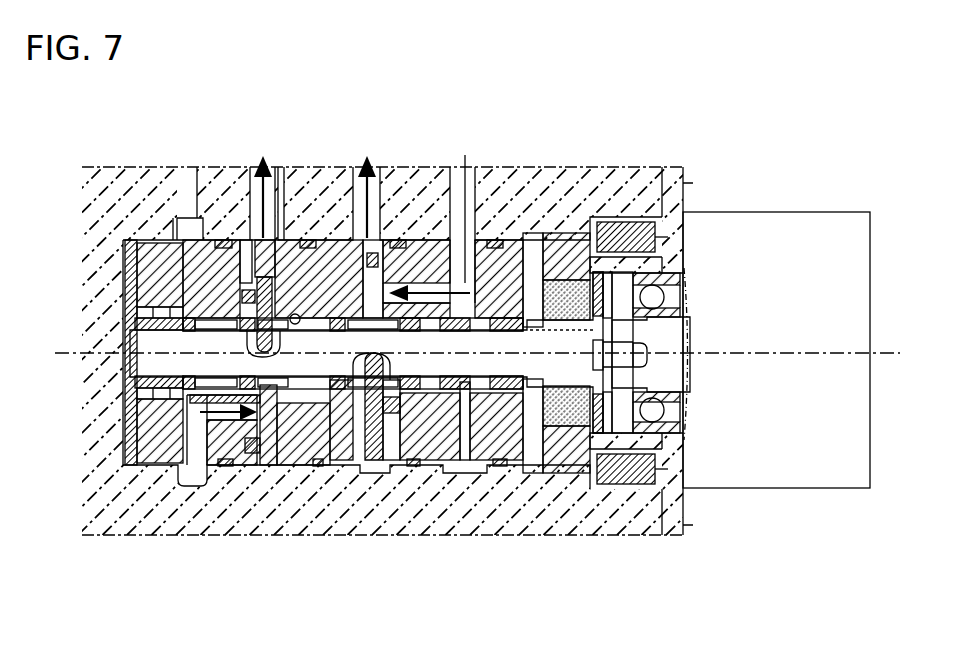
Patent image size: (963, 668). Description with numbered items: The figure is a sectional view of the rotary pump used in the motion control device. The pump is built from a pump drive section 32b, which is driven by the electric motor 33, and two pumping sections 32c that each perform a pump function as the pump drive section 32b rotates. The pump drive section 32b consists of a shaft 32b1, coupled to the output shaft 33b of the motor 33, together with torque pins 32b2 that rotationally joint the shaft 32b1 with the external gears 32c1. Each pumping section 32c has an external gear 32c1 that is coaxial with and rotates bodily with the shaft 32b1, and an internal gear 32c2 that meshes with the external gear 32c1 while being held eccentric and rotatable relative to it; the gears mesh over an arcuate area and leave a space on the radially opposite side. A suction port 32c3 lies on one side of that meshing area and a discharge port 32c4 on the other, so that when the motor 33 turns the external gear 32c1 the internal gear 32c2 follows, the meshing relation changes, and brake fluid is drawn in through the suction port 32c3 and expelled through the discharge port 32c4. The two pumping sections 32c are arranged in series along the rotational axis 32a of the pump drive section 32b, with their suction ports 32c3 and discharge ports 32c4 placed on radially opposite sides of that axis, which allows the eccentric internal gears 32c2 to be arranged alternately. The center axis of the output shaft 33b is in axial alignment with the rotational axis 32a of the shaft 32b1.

The electric motor 33 is at (770, 212).
The rotational axis 32a is at (780, 352).
The output shaft 33b is at (676, 370).
The shaft 32b1 is at (326, 340).
The discharge port 32c4 is at (397, 473).
The suction port 32c3 is at (423, 295).
The torque pin 32b2 is at (252, 330).
The pumping section 32c is at (262, 470).
The internal gear 32c2 is at (297, 472).
The external gear 32c1 is at (305, 472).
The pump drive section 32b is at (458, 478).